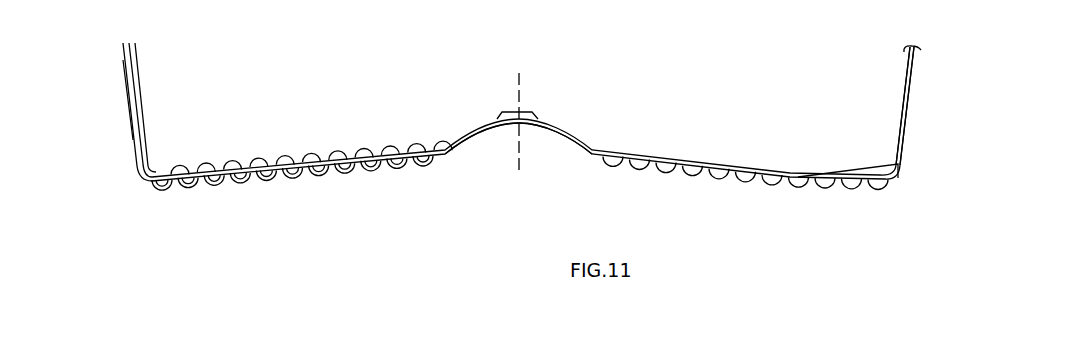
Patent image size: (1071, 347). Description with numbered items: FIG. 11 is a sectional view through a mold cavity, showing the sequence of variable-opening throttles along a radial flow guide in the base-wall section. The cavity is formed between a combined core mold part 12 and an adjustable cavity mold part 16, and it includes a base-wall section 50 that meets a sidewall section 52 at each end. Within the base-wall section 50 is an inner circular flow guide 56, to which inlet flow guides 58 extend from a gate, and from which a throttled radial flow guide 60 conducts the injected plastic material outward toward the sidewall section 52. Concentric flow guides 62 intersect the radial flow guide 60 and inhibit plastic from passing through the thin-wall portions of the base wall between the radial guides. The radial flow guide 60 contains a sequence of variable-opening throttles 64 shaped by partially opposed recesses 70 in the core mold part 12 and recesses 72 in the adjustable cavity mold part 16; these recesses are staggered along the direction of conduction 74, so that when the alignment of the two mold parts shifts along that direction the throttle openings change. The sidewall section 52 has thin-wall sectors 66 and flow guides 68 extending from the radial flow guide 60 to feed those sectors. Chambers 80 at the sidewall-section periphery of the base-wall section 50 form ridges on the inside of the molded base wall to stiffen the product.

The combined core mold part 12 is at (301, 275).
The adjustable cavity mold part 16 is at (833, 254).
The base-wall section 50 is at (810, 172).
The sidewall section 52 is at (120, 71).
The inner circular flow guide 56 is at (446, 156).
The inlet flow guides 58 is at (463, 122).
The throttled radial flow guides 60 is at (402, 131).
The concentric flow guides 62 is at (185, 191).
The variable-opening throttles 64 is at (199, 172).
The thin-wall sectors 66 is at (904, 88).
The flow guides 68 is at (120, 93).
The recesses 70 is at (373, 150).
The recesses 72 is at (358, 176).
The direction of conduction 74 is at (337, 245).
The chambers 80 is at (866, 160).